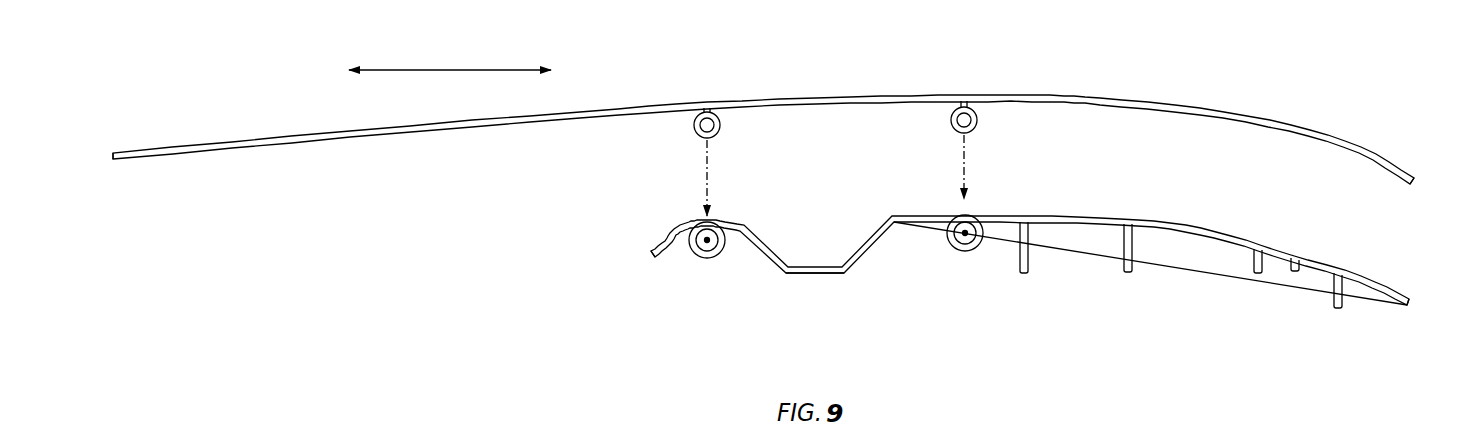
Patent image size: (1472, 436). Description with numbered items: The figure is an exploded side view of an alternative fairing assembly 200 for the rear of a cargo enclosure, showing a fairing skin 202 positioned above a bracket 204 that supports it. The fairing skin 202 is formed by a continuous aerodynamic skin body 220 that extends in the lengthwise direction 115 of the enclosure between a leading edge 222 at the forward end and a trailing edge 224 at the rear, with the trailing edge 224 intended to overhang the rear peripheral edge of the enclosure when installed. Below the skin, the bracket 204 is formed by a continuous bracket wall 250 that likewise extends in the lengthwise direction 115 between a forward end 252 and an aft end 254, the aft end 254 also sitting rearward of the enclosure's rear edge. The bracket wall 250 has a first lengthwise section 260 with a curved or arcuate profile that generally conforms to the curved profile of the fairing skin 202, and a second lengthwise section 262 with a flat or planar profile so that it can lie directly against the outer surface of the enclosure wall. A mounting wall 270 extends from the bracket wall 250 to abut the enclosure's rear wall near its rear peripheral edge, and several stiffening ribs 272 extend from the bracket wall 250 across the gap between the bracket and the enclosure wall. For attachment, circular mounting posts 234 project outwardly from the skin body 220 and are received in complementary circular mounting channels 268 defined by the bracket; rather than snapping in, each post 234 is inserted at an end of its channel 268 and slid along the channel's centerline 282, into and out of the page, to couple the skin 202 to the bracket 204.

The lengthwise direction 115 is at (467, 68).
The fairing assembly 200 is at (773, 221).
The fairing skin 202 is at (768, 114).
The bracket 204 is at (1014, 289).
The skin body 220 is at (1014, 91).
The leading edge 222 is at (112, 156).
The trailing edge 224 is at (1414, 182).
The mounting posts 234 is at (720, 126).
The bracket wall 250 is at (1173, 216).
The forward end 252 is at (656, 252).
The aft end 254 is at (1412, 302).
The first lengthwise section 260 is at (1413, 228).
The second lengthwise section 262 is at (845, 297).
The mounting channels 268 is at (701, 260).
The mounting wall 270 is at (1333, 292).
The stiffening ribs 272 is at (1030, 258).
The centerline 282 is at (709, 241).